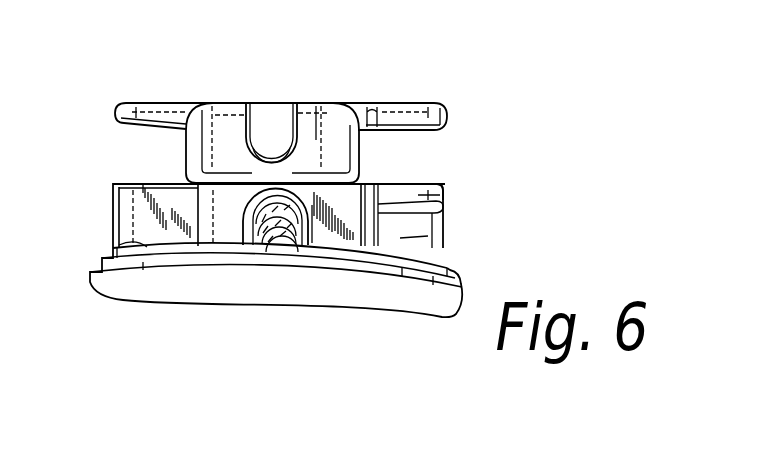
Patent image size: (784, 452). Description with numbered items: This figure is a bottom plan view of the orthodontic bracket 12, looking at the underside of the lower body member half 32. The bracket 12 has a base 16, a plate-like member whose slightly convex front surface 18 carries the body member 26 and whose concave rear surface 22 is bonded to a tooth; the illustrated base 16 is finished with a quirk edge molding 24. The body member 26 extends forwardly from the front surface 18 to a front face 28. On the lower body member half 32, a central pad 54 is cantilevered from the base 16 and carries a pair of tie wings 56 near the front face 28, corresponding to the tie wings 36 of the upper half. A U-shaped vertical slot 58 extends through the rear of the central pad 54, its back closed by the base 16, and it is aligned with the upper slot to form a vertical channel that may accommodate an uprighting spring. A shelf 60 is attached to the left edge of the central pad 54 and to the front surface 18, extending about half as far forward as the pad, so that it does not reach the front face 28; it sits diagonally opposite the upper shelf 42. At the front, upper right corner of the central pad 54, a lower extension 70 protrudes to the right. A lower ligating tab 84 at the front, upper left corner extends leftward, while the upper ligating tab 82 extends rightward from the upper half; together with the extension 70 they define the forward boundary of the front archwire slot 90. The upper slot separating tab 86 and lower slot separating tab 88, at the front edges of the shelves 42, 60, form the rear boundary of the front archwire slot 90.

The bracket 12 is at (88, 66).
The base 16 is at (406, 328).
The front surface 18 is at (147, 247).
The rear surface 22 is at (363, 297).
The quirk edge molding 24 is at (457, 281).
The body member 26 is at (99, 199).
The front face 28 is at (240, 101).
The lower body member half 32 is at (232, 254).
The tie wings 36 is at (403, 6).
The shelf 42 is at (417, 242).
The central pad 54 is at (318, 232).
The tie wings 56 is at (200, 130).
The U-shaped vertical slot 58 is at (272, 246).
The shelf 60 is at (143, 184).
The lower extension 70 is at (372, 108).
The upper ligating tab 82 is at (438, 105).
The lower ligating tab 84 is at (140, 108).
The upper slot separating tab 86 is at (441, 197).
The lower slot separating tab 88 is at (163, 184).
The front archwire slot 90 is at (410, 131).